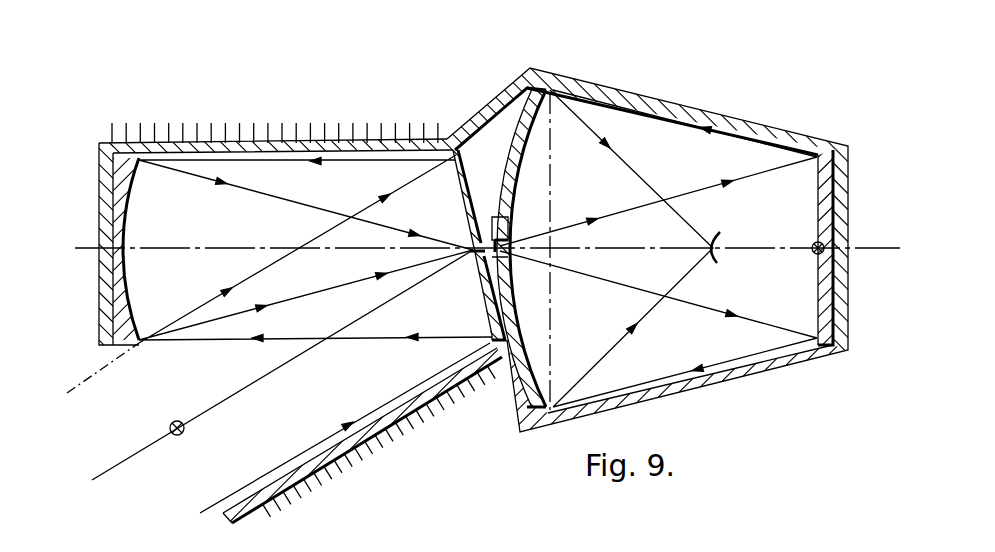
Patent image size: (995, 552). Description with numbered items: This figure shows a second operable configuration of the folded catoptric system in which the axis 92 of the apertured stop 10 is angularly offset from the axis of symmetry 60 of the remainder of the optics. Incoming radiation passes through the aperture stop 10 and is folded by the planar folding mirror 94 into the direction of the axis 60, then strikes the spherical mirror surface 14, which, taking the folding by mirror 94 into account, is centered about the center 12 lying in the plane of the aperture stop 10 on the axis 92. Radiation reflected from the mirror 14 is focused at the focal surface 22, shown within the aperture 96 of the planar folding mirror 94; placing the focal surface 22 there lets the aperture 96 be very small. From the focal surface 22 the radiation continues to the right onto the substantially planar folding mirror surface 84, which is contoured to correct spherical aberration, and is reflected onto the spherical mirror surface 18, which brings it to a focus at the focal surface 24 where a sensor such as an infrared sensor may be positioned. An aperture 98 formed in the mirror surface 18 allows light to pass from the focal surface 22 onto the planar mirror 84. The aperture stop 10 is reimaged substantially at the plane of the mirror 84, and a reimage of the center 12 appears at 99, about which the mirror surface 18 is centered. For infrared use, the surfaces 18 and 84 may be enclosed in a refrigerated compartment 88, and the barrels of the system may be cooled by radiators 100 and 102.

The aperture stop 10 is at (131, 354).
The center 12 is at (177, 421).
The spherical mirror surface 14 is at (128, 200).
The spherical mirror surface 18 is at (526, 147).
The focal surface 22 is at (474, 258).
The focal surface 24 is at (718, 264).
The axis of symmetry 60 is at (80, 247).
The planar folding mirror surface 84 is at (818, 294).
The refrigerated compartment 88 is at (694, 110).
The axis 92 is at (268, 372).
The planar folding mirror 94 is at (480, 300).
The aperture 96 is at (458, 180).
The aperture 98 is at (511, 238).
The reimaged center 99 is at (835, 236).
The radiator 100 is at (273, 127).
The radiator 102 is at (388, 443).